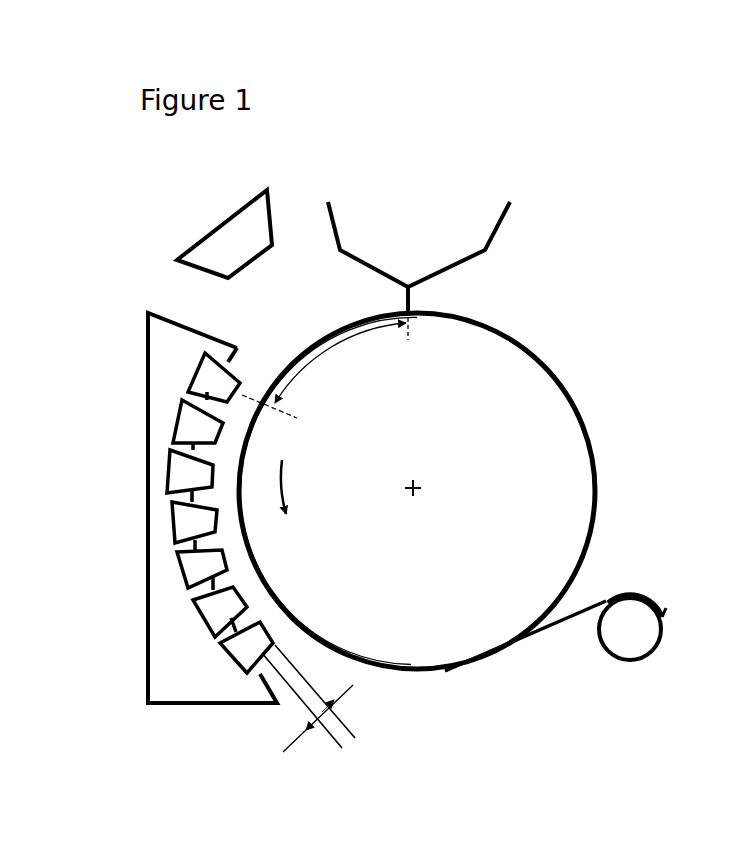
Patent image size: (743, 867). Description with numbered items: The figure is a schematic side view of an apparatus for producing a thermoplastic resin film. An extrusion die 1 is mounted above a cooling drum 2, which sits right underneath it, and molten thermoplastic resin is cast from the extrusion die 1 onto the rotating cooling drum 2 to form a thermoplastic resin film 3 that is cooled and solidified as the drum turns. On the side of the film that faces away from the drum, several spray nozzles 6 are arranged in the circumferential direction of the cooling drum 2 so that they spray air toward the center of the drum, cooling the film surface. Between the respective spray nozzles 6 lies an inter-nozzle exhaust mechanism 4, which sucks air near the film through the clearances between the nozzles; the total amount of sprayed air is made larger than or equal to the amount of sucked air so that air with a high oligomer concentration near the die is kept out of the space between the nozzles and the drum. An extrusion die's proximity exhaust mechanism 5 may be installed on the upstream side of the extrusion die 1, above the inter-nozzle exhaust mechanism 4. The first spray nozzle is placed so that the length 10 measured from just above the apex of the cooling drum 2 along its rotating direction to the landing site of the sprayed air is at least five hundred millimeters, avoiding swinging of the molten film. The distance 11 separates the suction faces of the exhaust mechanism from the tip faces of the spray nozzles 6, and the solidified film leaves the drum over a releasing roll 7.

The extrusion die 1 is at (505, 222).
The cooling drum 2 is at (536, 355).
The thermoplastic resin film 3 is at (394, 312).
The inter-nozzle exhaust mechanism 4 is at (147, 343).
The extrusion die's proximity exhaust mechanism 5 is at (220, 224).
The spray nozzle 6 is at (198, 372).
The releasing roll 7 is at (641, 656).
The length from just above the apex of a cooling drum to the landing site of the air 10 is at (318, 350).
The distance from the suction faces of an exhaust mechanism to the tip faces of spra 11 is at (300, 738).